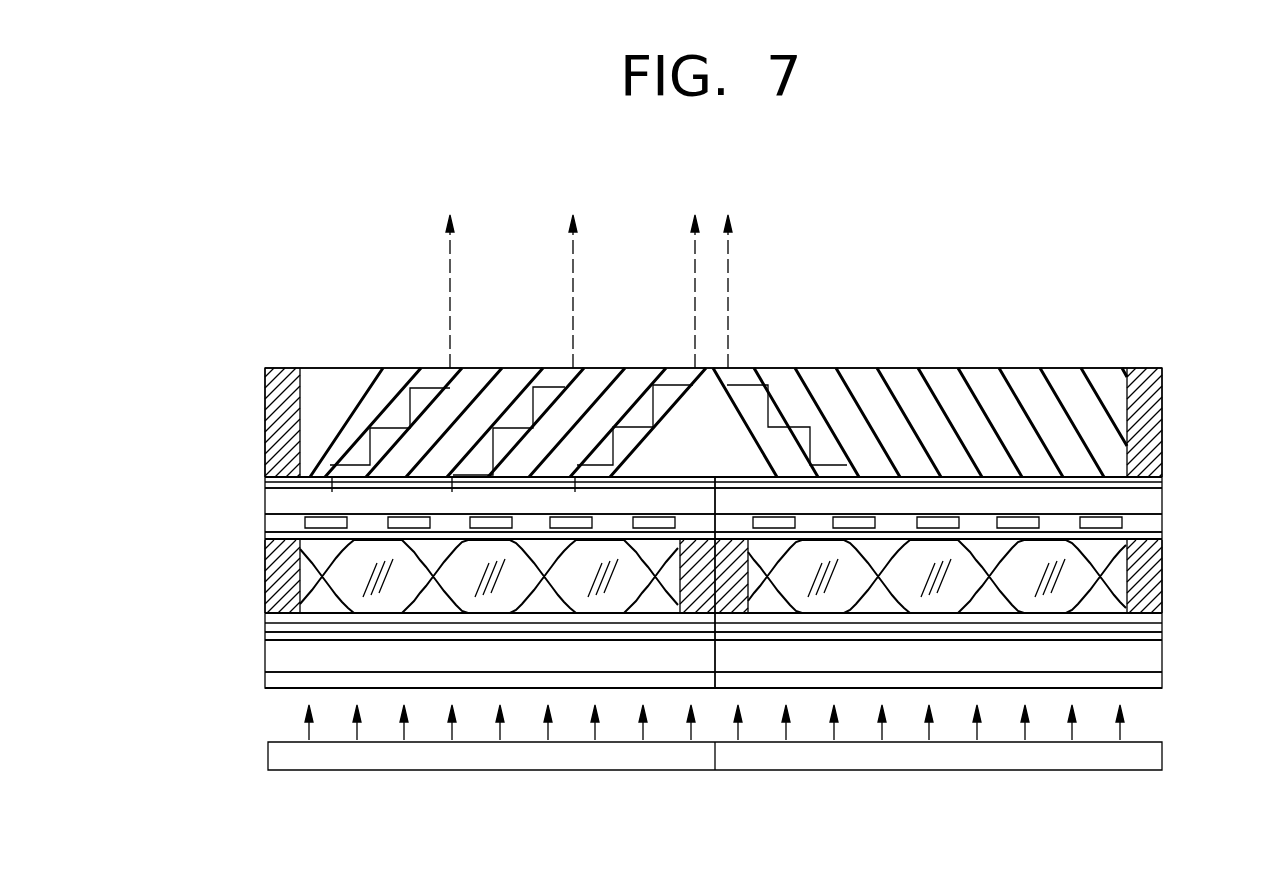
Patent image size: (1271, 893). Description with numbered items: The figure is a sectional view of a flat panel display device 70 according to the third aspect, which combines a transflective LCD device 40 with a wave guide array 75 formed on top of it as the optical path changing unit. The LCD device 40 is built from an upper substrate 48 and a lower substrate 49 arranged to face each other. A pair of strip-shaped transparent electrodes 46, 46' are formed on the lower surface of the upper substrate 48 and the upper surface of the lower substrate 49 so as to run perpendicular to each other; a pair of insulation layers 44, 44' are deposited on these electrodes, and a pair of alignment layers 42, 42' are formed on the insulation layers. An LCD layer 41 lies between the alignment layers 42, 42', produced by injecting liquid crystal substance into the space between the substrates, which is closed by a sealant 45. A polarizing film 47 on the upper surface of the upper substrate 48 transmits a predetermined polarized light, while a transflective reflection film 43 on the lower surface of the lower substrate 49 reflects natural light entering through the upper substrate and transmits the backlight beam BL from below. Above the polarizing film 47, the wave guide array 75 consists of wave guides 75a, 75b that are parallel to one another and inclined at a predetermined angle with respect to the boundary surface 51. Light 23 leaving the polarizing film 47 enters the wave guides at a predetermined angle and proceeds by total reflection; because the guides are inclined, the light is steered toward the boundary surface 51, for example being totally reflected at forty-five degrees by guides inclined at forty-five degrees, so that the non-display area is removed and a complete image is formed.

The flat panel display device 70 is at (1150, 262).
The LCD device 40 is at (195, 487).
The wave guide array 75 is at (1045, 190).
The wave guide 75a is at (636, 368).
The second inclined prism portion 75b is at (780, 375).
The light 23 is at (695, 290).
The boundary surface 51 is at (715, 480).
The polarizing film 47 is at (1162, 478).
The upper substrate 48 is at (1162, 497).
The transparent electrode 46 is at (744, 519).
The insulation layer 44 is at (681, 526).
The alignment layer 42 is at (744, 542).
The LCD layer 41 is at (355, 563).
The sealant 45 is at (273, 587).
The alignment layer 42' is at (746, 615).
The transparent electrode 46' is at (746, 638).
The insulation layer 44' is at (680, 631).
The lower substrate 49 is at (1162, 660).
The transflective reflection film 43 is at (1162, 681).
The backlight beam BL is at (1162, 755).